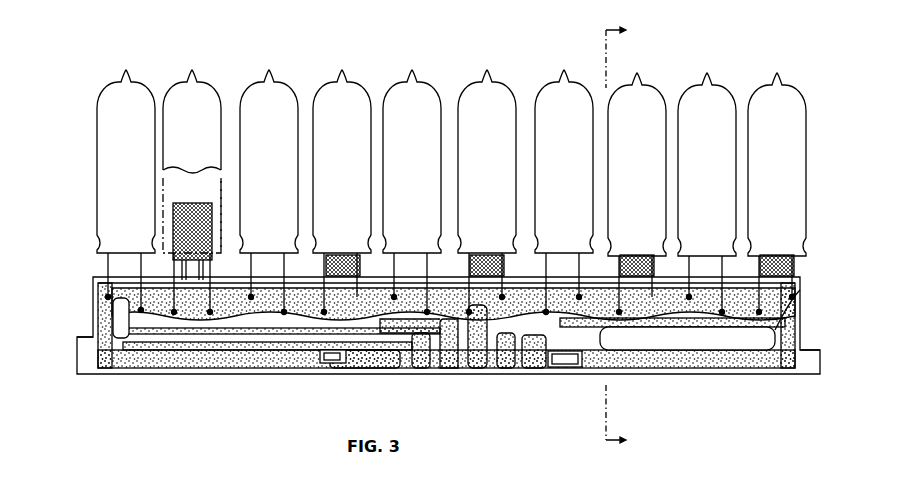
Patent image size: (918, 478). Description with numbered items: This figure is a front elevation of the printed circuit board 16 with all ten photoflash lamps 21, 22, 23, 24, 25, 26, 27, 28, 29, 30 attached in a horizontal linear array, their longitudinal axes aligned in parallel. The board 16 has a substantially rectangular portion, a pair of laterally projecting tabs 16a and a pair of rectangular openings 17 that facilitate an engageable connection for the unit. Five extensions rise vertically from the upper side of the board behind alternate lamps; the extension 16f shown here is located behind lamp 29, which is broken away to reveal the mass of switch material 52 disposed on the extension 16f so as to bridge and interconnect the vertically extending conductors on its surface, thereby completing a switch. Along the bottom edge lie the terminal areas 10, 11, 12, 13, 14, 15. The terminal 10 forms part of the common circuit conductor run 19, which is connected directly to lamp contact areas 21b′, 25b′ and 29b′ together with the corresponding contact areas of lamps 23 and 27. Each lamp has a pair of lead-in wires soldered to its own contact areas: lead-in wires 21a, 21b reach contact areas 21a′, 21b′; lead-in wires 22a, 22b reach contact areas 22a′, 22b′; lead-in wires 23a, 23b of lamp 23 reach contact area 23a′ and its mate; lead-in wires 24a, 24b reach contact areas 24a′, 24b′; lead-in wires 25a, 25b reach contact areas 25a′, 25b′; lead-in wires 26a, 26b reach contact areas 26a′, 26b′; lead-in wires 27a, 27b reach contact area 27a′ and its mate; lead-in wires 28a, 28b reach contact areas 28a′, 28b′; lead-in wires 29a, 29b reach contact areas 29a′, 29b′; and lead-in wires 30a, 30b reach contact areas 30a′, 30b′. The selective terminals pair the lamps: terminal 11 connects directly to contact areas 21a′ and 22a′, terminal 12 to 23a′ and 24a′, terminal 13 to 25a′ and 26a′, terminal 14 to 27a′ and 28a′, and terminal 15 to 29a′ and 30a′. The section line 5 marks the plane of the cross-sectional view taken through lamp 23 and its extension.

The section line 5 is at (622, 236).
The terminal 10 is at (380, 368).
The selective terminal 11 is at (529, 368).
The selective terminal 12 is at (504, 368).
The selective terminal 13 is at (477, 368).
The selective terminal 14 is at (449, 368).
The selective terminal 15 is at (421, 368).
The circuit board 16 is at (95, 293).
The laterally projecting tab 16a is at (820, 366).
The circuit board extension 16f is at (207, 245).
The rectangular opening 17 is at (319, 362).
The common circuit conductor run 19 is at (122, 368).
The photoflash lamp 21 is at (787, 85).
The lead-in wire 21a is at (775, 290).
The lead-in wire 21b is at (795, 268).
The lamp contact area 21a′ is at (762, 315).
The lamp contact area 21b′ is at (794, 300).
The photoflash lamp 22 is at (717, 85).
The lead-in wire 22a is at (722, 258).
The lead-in wire 22b is at (690, 258).
The lamp contact area 22a′ is at (740, 331).
The lamp contact area 22b′ is at (692, 284).
The photoflash lamp 23 is at (647, 85).
The lead-in wire 23a is at (619, 262).
The lead-in wire 23b is at (652, 300).
The lamp contact area 23a′ is at (617, 316).
The photoflash lamp 24 is at (574, 82).
The lead-in wire 24a is at (548, 262).
The lead-in wire 24b is at (579, 253).
The lamp contact area 24a′ is at (575, 368).
The lamp contact area 24b′ is at (577, 296).
The photoflash lamp 25 is at (497, 82).
The lead-in wire 25a is at (471, 262).
The lead-in wire 25b is at (502, 253).
The lamp contact area 25a′ is at (469, 305).
The lamp contact area 25b′ is at (502, 301).
The photoflash lamp 26 is at (422, 82).
The lead-in wire 26a is at (428, 253).
The lead-in wire 26b is at (396, 262).
The lamp contact area 26a′ is at (428, 300).
The lamp contact area 26b′ is at (394, 292).
The photoflash lamp 27 is at (352, 82).
The lead-in wire 27a is at (326, 262).
The lead-in wire 27b is at (358, 253).
The lamp contact area 27a′ is at (322, 300).
The photoflash lamp 28 is at (279, 82).
The lead-in wire 28a is at (285, 253).
The lead-in wire 28b is at (253, 262).
The lamp contact area 28a′ is at (284, 316).
The lamp contact area 28b′ is at (252, 301).
The photoflash lamp 29 is at (202, 82).
The lead-in wire 29a is at (163, 282).
The lead-in wire 29b is at (211, 296).
The lamp contact area 29a′ is at (174, 316).
The lamp contact area 29b′ is at (210, 316).
The photoflash lamp 30 is at (136, 82).
The lead-in wire 30a is at (139, 267).
The lead-in wire 30b is at (106, 262).
The lamp contact area 30a′ is at (139, 312).
The lamp contact area 30b′ is at (106, 299).
The switch material 52 is at (208, 204).